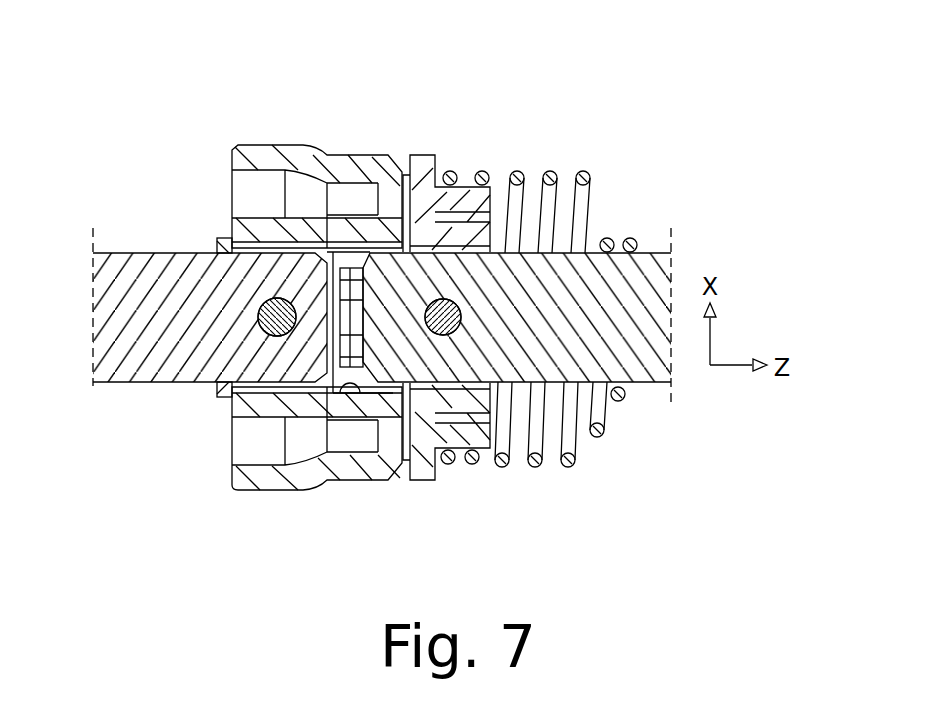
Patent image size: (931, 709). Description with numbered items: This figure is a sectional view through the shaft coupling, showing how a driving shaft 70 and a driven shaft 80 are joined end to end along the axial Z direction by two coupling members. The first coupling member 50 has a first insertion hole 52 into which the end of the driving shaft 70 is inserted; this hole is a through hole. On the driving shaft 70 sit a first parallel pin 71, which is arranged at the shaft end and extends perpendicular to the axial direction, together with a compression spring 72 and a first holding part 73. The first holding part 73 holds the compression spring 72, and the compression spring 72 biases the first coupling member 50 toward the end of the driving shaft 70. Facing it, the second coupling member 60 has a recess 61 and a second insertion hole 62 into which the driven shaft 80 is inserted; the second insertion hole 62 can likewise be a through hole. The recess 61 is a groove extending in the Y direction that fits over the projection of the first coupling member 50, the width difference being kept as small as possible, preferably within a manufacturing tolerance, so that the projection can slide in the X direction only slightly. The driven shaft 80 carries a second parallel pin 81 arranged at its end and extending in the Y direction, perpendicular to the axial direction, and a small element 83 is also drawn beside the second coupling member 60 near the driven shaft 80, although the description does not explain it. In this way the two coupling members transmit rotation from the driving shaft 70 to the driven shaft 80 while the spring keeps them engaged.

The first coupling member 50 is at (425, 472).
The first insertion hole 52 is at (462, 252).
The second coupling member 60 is at (260, 150).
The recess 61 is at (342, 398).
The second insertion hole 62 is at (304, 246).
The driving shaft 70 is at (653, 383).
The first parallel pin 71 is at (455, 331).
The compression spring 72 is at (580, 172).
The first holding part 73 is at (633, 238).
The driven shaft 80 is at (142, 264).
The second parallel pin 81 is at (259, 319).
The seal 83 is at (220, 238).